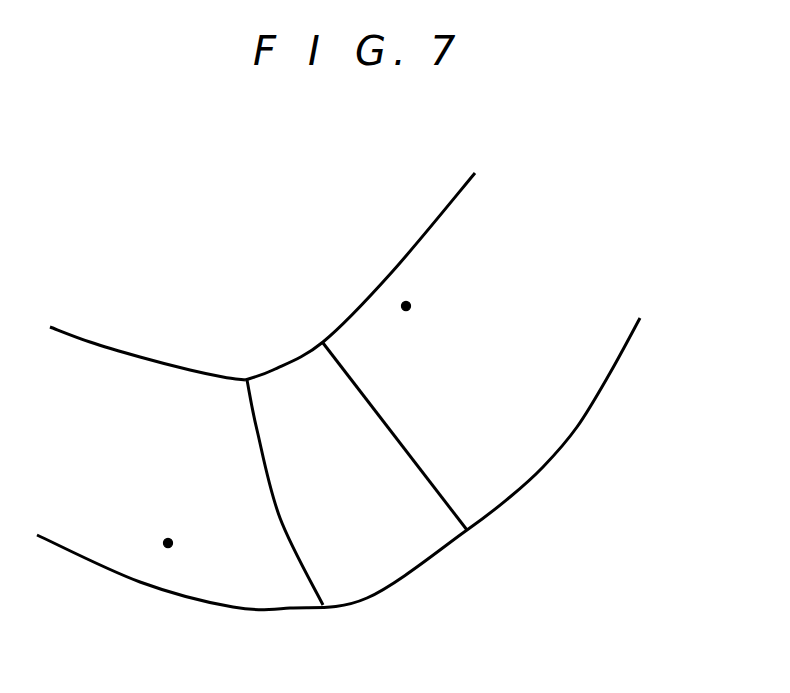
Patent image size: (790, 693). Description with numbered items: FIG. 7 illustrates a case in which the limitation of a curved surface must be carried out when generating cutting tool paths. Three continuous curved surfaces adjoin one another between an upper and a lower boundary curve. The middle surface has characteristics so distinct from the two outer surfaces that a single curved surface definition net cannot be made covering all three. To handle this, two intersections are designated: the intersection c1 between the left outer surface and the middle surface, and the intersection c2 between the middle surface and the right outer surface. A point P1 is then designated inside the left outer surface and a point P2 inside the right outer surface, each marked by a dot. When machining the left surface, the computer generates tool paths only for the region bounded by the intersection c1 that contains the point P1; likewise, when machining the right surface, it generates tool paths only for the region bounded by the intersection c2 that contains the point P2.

The point P1 is at (168, 543).
The point P2 is at (406, 306).
The intersection c1 is at (281, 518).
The intersection c2 is at (417, 465).